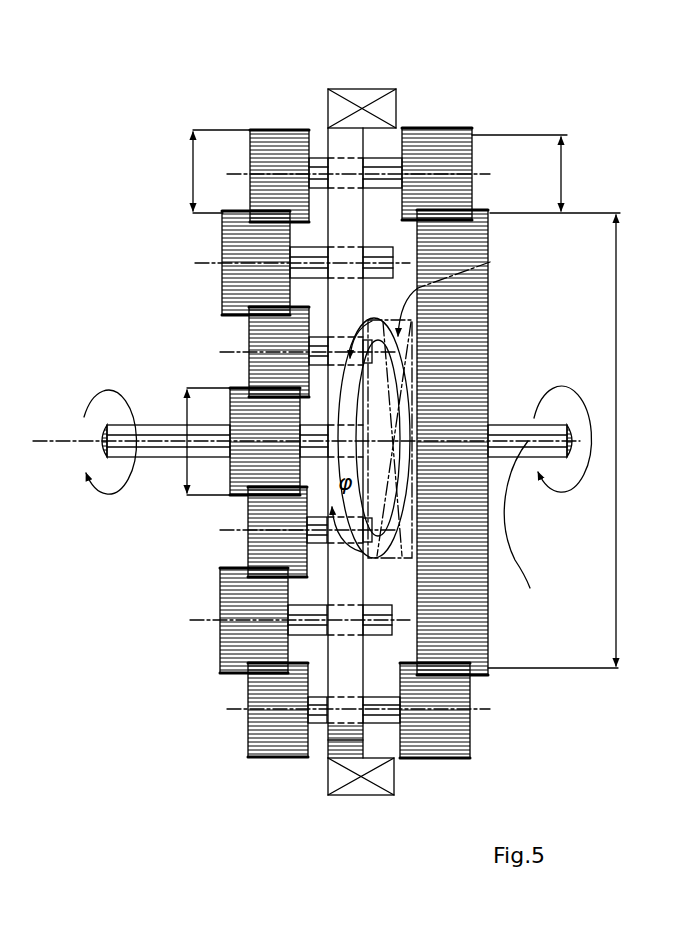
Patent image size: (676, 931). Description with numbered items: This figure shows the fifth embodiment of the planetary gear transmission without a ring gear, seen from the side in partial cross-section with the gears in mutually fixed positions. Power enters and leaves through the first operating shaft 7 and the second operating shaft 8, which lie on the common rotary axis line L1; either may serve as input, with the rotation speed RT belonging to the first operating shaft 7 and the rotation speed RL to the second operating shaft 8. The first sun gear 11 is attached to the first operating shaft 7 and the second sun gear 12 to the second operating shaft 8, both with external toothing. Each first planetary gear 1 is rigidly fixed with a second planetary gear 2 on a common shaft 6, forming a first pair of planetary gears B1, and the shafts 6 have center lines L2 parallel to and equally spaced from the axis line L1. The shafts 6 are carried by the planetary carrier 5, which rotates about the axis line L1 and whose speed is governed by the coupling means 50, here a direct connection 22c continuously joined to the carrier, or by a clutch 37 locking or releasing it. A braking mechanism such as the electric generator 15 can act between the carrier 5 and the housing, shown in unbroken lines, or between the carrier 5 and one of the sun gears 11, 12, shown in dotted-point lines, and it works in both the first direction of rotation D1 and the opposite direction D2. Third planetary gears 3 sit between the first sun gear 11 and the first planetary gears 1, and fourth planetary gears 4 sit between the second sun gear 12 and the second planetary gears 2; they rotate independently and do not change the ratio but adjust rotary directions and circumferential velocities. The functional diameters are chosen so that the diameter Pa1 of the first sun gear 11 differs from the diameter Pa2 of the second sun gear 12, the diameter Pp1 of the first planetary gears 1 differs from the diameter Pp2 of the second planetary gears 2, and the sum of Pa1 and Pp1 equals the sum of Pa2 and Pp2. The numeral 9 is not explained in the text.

The first planetary gear 1 is at (442, 147).
The second planetary gear 2 is at (285, 138).
The third planetary gear 3 is at (262, 338).
The fourth planetary gear 4 is at (265, 280).
The planetary carrier 5 is at (354, 223).
The shaft 6 is at (383, 165).
The first operating shaft 7 is at (173, 450).
The second operating shaft 8 is at (513, 430).
The hub of gear 4 9 is at (313, 343).
The first sun gear 11 is at (465, 365).
The second sun gear 12 is at (247, 470).
The electric generator 15 is at (480, 268).
The direct connection 22c is at (353, 124).
The clutch 37 is at (408, 843).
The coupling means 50 is at (314, 768).
The common rotary axis line L1 is at (526, 528).
The center line of planetary gear shaft L2 is at (318, 170).
The first direction of rotation D1 is at (348, 547).
The second direction of rotation D2 is at (352, 371).
The functional diameter of first sun gear Pa1 is at (576, 441).
The functional diameter of second sun gear Pa2 is at (180, 420).
The functional diameter of first planetary gear Pp1 is at (546, 174).
The functional diameter of second planetary gear Pp2 is at (191, 171).
The speed of rotation of first operating shaft RT is at (95, 453).
The speed of rotation of second operating shaft RL is at (563, 460).
The first pair of planetary gears B1 is at (476, 157).